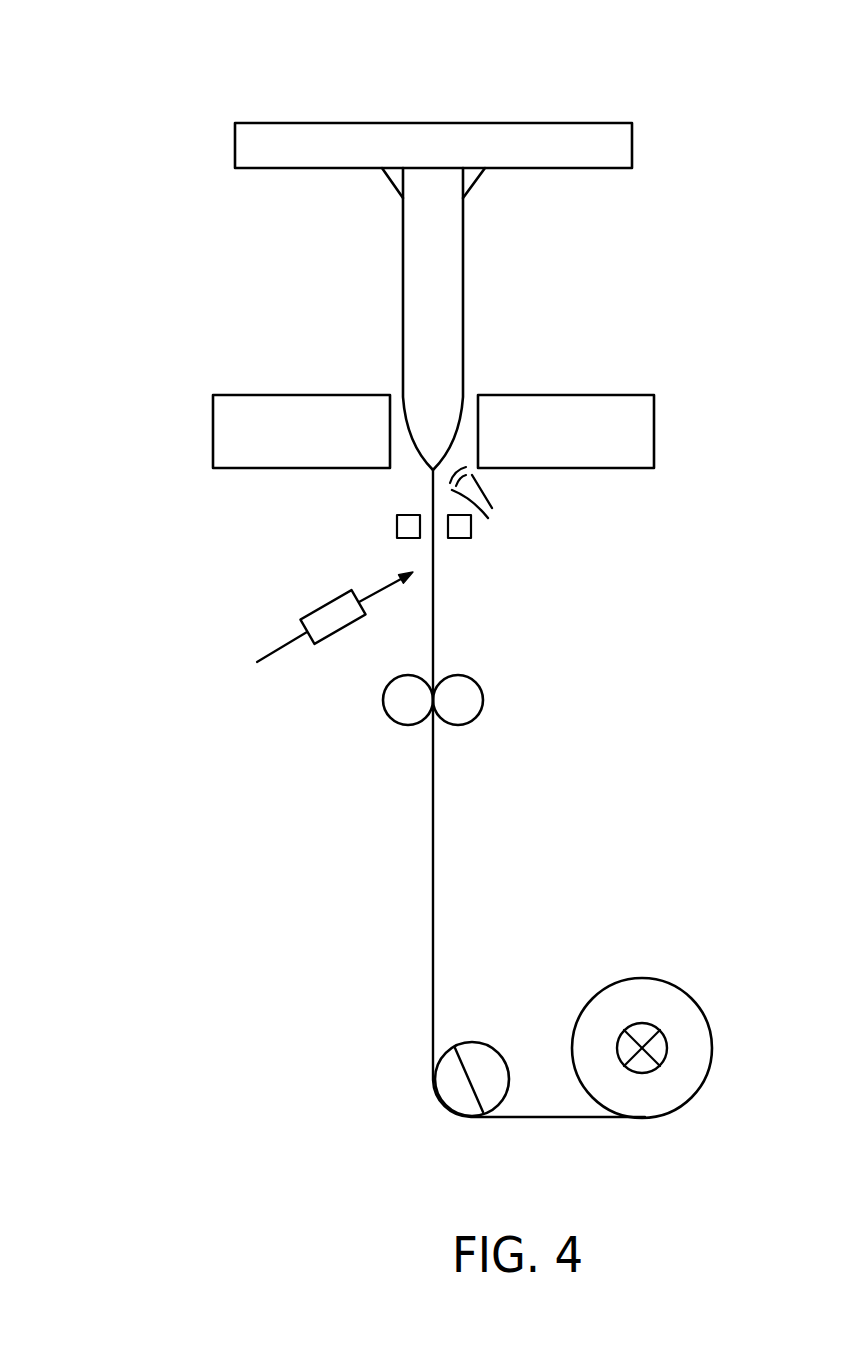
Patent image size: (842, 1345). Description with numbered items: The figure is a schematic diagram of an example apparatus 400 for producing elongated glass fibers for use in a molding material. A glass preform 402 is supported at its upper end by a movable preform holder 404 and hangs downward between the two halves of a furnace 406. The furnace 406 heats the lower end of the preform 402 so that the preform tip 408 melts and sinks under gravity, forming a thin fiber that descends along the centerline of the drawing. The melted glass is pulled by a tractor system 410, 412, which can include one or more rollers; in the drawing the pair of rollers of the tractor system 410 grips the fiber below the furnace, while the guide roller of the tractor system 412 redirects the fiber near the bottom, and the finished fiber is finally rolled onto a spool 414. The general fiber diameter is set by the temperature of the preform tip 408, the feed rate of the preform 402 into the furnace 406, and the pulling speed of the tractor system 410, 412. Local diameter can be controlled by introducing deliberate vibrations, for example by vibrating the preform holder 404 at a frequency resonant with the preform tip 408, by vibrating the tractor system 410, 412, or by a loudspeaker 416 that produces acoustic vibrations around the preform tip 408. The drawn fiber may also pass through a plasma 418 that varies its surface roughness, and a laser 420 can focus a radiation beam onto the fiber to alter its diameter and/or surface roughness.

The apparatus 400 is at (114, 97).
The glass preform 402 is at (463, 280).
The movable preform holder 404 is at (632, 141).
The furnace 406 is at (654, 428).
The preform tip 408 is at (433, 472).
The tractor system 410 is at (483, 698).
The tractor system 412 is at (472, 1043).
The spool 414 is at (650, 978).
The loudspeaker 416 is at (493, 503).
The plasma 418 is at (470, 535).
The laser 420 is at (320, 631).